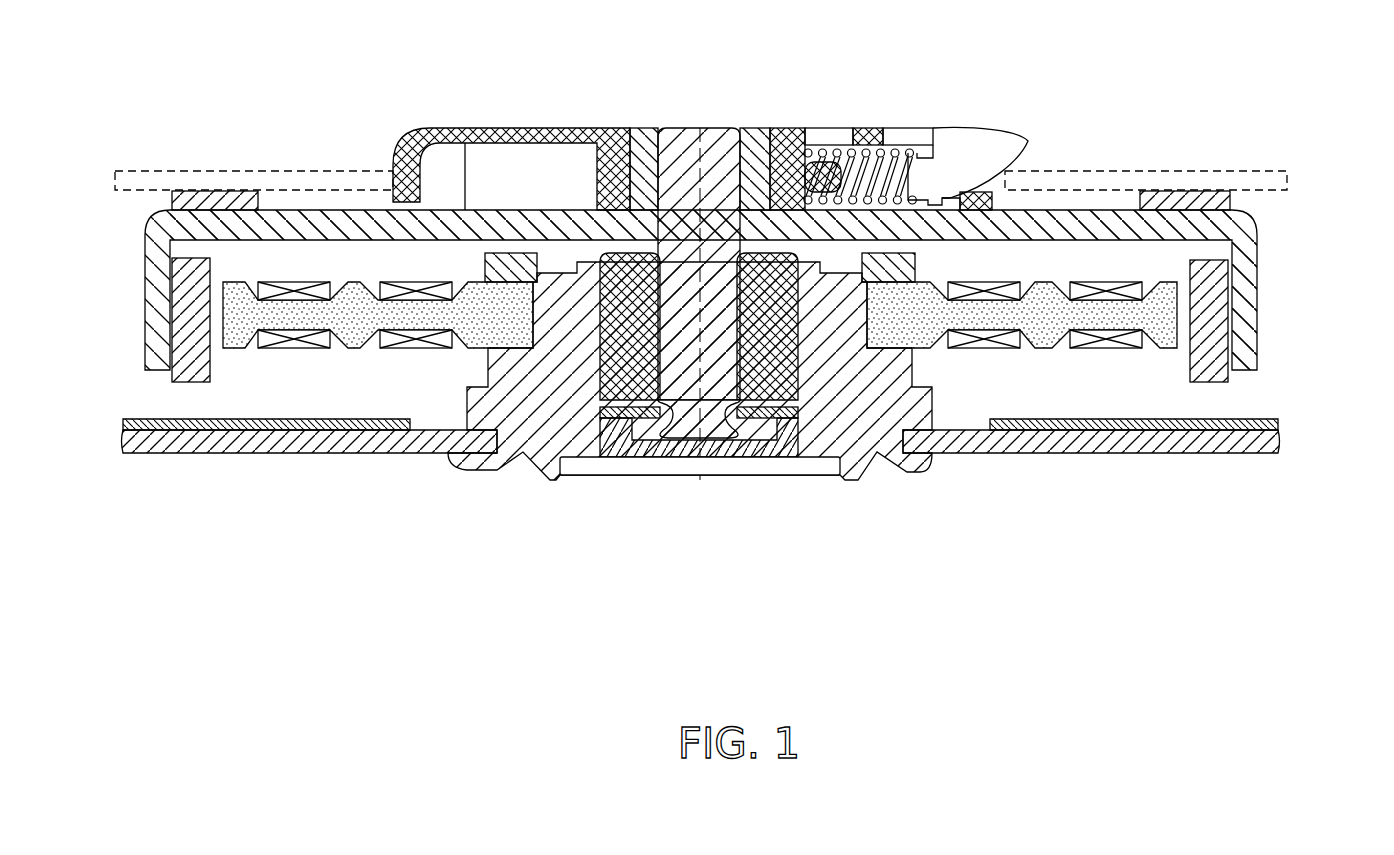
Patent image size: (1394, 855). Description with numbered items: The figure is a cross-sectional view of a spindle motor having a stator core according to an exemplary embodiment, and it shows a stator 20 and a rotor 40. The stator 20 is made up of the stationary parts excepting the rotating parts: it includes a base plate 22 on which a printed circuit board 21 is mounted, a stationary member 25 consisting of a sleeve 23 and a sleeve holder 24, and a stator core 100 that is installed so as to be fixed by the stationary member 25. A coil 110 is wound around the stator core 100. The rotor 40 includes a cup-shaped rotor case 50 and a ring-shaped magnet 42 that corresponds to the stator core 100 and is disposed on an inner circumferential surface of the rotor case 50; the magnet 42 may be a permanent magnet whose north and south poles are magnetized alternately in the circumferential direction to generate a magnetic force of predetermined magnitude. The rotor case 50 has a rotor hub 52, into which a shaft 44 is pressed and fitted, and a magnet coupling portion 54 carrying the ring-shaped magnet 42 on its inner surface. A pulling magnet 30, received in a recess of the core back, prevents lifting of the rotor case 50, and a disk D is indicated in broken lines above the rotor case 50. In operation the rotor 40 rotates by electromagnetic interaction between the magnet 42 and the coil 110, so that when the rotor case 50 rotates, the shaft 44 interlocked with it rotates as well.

The stator 20 is at (701, 528).
The printed circuit board 21 is at (1248, 440).
The base plate 22 is at (1188, 452).
The sleeve 23 is at (778, 392).
The sleeve holder 24 is at (860, 434).
The stationary member 25 is at (690, 435).
The pulling magnet 30 is at (700, 294).
The rotor 40 is at (742, 244).
The magnet 42 is at (1230, 288).
The shaft 44 is at (713, 147).
The rotor case 50 is at (1090, 213).
The rotor hub 52 is at (752, 153).
The magnet coupling portion 54 is at (1254, 342).
The stator core 100 is at (950, 349).
The coil 110 is at (1007, 341).
The disk D is at (1225, 177).